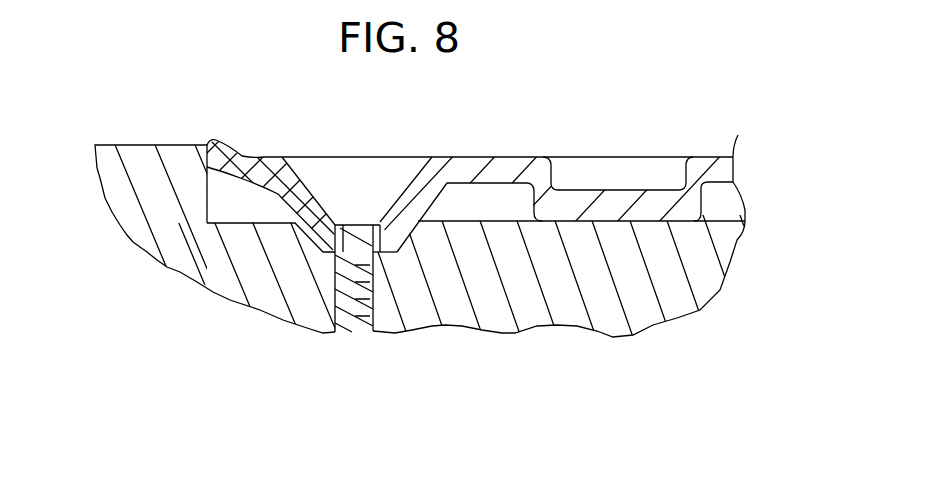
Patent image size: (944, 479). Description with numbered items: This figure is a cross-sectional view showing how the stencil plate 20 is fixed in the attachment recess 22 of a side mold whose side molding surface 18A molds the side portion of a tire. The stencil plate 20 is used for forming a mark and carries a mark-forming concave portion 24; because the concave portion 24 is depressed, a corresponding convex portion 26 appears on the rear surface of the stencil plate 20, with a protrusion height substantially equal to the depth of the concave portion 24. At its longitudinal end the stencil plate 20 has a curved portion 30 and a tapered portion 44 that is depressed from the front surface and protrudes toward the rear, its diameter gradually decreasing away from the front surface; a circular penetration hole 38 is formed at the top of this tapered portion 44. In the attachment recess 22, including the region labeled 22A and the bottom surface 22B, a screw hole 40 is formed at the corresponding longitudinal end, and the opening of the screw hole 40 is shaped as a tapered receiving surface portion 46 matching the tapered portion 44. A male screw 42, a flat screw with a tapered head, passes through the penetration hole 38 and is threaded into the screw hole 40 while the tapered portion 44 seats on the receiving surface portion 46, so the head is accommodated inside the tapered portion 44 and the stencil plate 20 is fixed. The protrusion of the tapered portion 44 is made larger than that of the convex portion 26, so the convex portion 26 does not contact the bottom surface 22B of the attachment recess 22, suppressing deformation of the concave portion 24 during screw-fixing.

The side molding surface 18A is at (128, 145).
The curved portion 30 is at (240, 153).
The penetration hole 38 is at (367, 244).
The male screw 42 is at (365, 192).
The stencil plate 20 is at (564, 176).
The concave portion 24 is at (615, 180).
The attachment recess 22 is at (445, 257).
The left body portion 22A is at (207, 190).
The bottom surface 22B is at (502, 221).
The convex portion 26 is at (638, 214).
The screw hole 40 is at (335, 332).
The tapered portion 44 is at (292, 222).
The receiving surface portion 46 is at (376, 254).